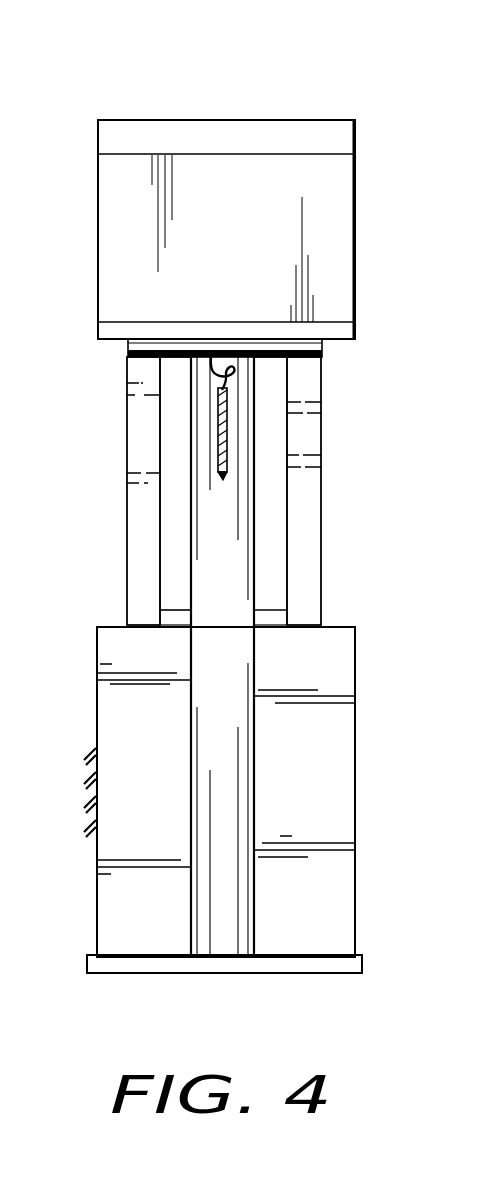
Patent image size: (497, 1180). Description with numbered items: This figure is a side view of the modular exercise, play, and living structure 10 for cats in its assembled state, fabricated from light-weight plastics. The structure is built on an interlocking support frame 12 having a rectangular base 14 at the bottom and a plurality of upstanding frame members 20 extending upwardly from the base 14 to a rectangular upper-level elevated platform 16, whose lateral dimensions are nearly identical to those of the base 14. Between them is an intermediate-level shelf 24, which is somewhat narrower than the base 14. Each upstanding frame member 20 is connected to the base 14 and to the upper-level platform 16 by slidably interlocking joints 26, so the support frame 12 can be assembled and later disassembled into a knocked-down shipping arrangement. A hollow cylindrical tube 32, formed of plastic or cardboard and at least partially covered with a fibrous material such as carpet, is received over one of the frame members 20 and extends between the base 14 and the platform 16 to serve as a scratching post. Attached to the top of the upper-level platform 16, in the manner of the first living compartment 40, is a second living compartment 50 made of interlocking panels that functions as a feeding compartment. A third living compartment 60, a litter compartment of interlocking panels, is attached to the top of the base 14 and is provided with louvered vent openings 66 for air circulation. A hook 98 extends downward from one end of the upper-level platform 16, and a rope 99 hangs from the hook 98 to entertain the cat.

The modular structure 10 is at (200, 90).
The support frame 12 is at (114, 470).
The base 14 is at (103, 963).
The upper-level elevated platform 16 is at (105, 330).
The upstanding frame members 20 is at (140, 531).
The shelf 24 is at (178, 620).
The slidably interlocking joints 26 is at (112, 362).
The hollow tube 32 is at (248, 424).
The first living compartment 40 is at (105, 137).
The second living compartment 50 is at (335, 214).
The third living compartment 60 is at (113, 907).
The louvered vent openings 66 is at (84, 780).
The hook 98 is at (208, 356).
The rope 99 is at (222, 430).